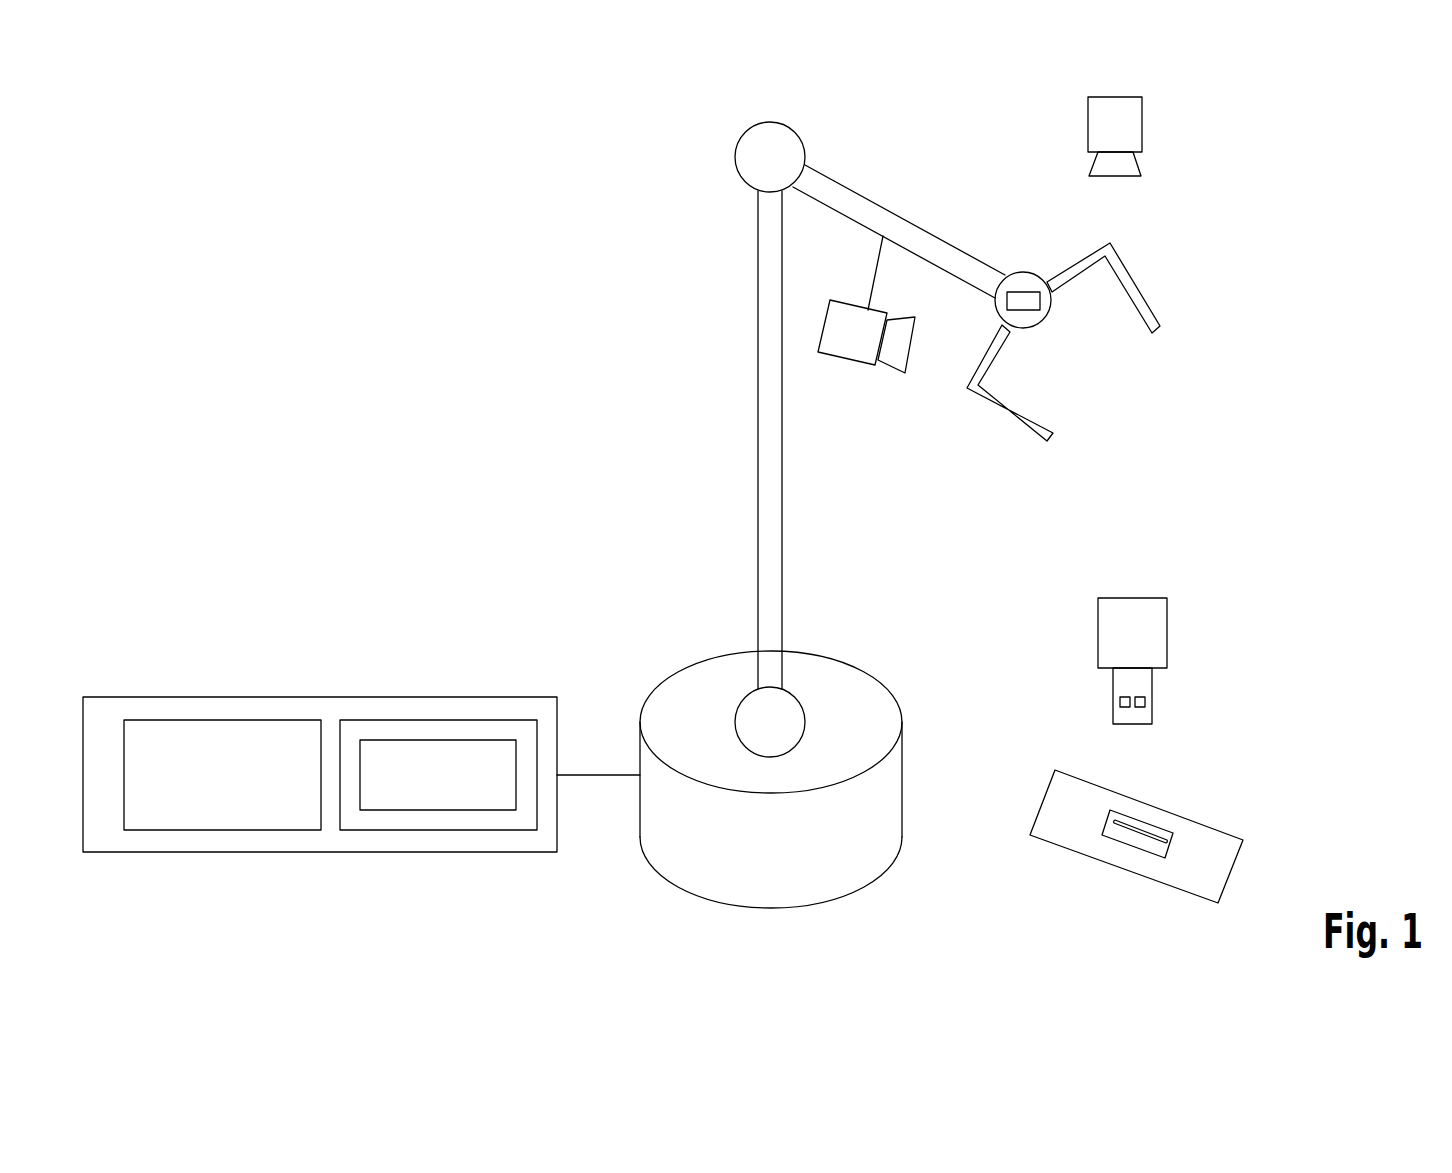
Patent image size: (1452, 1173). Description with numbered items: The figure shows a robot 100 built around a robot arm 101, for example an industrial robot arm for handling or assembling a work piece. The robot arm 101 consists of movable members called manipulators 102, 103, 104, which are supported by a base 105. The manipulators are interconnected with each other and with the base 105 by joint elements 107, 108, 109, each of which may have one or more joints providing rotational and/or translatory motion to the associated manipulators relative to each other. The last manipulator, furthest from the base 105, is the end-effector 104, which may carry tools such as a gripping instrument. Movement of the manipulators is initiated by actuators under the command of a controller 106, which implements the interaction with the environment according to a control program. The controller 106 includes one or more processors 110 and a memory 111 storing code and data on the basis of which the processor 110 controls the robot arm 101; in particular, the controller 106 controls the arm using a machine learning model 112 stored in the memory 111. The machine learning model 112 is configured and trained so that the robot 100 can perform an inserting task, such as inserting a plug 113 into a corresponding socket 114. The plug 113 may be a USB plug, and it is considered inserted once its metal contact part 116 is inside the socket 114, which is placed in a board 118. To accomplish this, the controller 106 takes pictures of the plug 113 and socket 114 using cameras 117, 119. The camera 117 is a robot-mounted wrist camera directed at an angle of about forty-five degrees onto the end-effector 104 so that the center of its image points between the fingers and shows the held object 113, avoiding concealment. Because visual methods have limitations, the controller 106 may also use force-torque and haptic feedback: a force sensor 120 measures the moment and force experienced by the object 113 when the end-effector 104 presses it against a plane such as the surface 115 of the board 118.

The robot 100 is at (1266, 186).
The robot arm 101 is at (720, 362).
The manipulator 102 is at (765, 482).
The manipulator 103 is at (908, 230).
The end-effector 104 is at (1135, 292).
The base 105 is at (887, 795).
The controller 106 is at (320, 697).
The joint element 107 is at (752, 705).
The joint element 108 is at (744, 157).
The joint element 109 is at (1015, 283).
The processor 110 is at (226, 720).
The memory 111 is at (416, 720).
The machine learning model 112 is at (478, 740).
The plug 113 is at (1133, 598).
The socket 114 is at (1133, 828).
The surface 115 is at (1188, 845).
The metal contact part 116 is at (1152, 692).
The camera 117 is at (843, 367).
The board 118 is at (1243, 835).
The camera 119 is at (1088, 121).
The force sensor 120 is at (1029, 290).